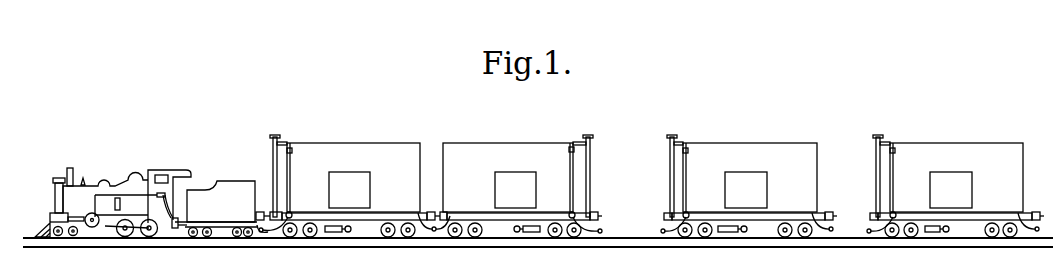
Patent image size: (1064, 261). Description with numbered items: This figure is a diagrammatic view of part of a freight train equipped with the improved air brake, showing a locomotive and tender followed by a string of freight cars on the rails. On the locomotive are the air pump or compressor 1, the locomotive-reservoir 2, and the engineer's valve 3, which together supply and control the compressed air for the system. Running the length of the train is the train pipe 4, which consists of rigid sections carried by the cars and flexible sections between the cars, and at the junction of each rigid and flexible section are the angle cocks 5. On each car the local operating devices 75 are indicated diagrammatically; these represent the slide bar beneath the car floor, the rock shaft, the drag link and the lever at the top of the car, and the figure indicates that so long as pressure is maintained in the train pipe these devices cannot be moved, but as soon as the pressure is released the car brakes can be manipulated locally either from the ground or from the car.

The air pump or compressor 1 is at (122, 205).
The locomotive-reservoir 2 is at (90, 212).
The engineer's valve 3 is at (165, 193).
The train pipe 4 is at (499, 218).
The angle cocks 5 is at (414, 211).
The local brake operating devices 75 is at (291, 144).